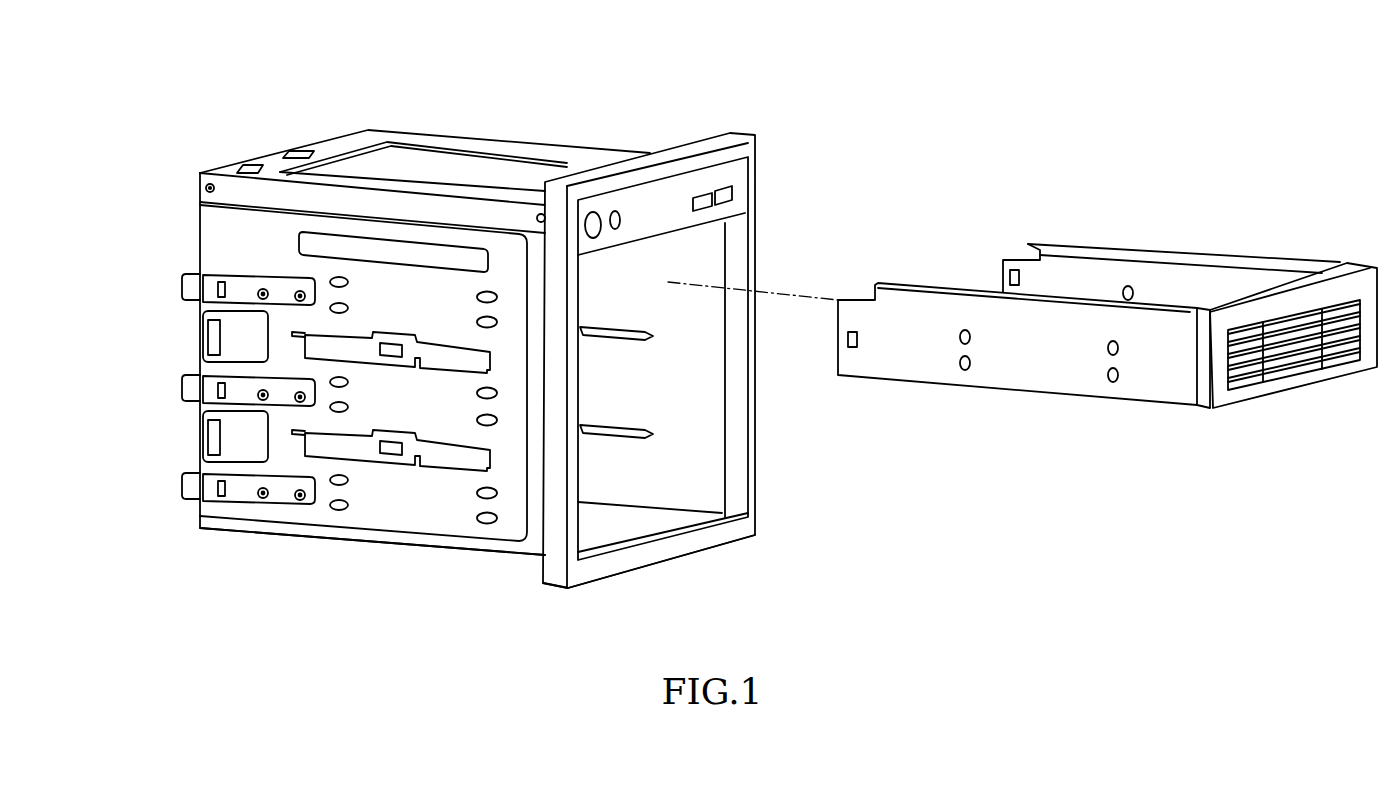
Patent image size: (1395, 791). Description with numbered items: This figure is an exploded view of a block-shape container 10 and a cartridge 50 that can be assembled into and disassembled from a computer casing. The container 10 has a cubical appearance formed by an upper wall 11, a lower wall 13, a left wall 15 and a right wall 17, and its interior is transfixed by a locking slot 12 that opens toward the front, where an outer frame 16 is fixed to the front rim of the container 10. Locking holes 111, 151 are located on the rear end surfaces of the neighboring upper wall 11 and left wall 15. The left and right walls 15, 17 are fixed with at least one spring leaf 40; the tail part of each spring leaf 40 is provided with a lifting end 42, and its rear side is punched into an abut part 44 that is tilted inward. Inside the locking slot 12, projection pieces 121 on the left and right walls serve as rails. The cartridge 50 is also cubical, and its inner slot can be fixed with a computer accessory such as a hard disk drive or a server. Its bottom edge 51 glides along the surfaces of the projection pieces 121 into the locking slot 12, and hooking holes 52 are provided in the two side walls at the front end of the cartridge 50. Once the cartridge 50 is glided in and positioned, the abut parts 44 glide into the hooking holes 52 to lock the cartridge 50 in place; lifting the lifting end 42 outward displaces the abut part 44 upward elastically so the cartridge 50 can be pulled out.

The block-shape container 10 is at (391, 98).
The upper wall 11 is at (490, 162).
The locking holes 111 is at (302, 150).
The locking slot 12 is at (713, 255).
The lower wall 13 is at (521, 556).
The left wall 15 is at (391, 518).
The locking holes 151 is at (213, 348).
The outer frame 16 is at (663, 552).
The right wall 17 is at (585, 148).
The spring leaf 40 is at (274, 282).
The lifting end 42 is at (190, 276).
The abut part 44 is at (224, 289).
The projection pieces 121 is at (308, 446).
The cartridge 50 is at (1084, 386).
The bottom edge 51 is at (936, 388).
The hooking holes 52 is at (1012, 276).